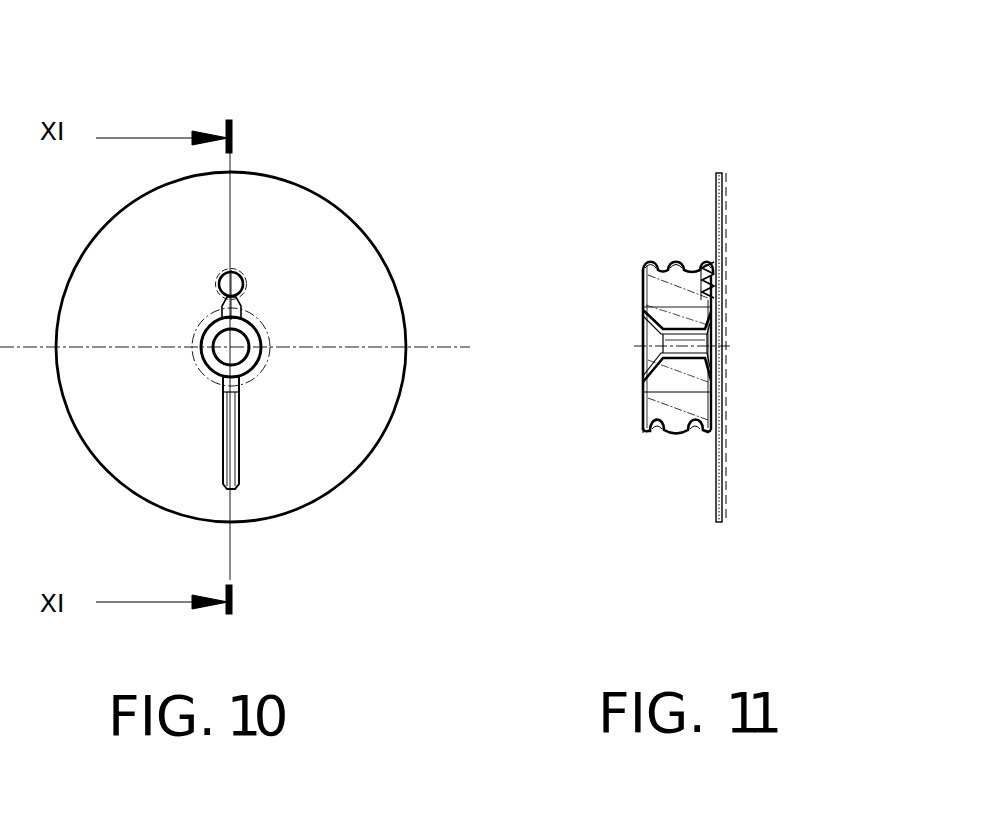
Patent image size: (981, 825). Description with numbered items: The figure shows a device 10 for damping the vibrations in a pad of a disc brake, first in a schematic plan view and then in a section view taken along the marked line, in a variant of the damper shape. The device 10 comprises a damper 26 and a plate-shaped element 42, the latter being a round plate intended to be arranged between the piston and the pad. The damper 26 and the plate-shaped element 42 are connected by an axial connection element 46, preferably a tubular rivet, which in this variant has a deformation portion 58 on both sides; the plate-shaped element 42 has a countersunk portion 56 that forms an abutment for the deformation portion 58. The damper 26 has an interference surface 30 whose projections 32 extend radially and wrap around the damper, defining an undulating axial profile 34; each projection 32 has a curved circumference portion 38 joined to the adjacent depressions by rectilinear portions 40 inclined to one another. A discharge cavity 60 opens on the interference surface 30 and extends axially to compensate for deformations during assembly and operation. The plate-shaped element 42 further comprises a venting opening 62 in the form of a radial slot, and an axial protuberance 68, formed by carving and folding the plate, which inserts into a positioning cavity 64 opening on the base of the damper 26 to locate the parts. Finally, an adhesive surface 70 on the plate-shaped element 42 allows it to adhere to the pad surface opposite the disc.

In FIG. 10, the device for damping the vibrations in a pad of a disc brake 10 is at (301, 158).
In FIG. 11, the device for damping the vibrations in a pad of a disc brake 10 is at (716, 150).
In FIG. 11, the damper 26 is at (652, 296).
In FIG. 11, the interference surface 30 is at (678, 449).
In FIG. 11, the projection 32 is at (706, 263).
In FIG. 11, the undulating axial profile 34 is at (648, 434).
In FIG. 11, the circumference portion 38 is at (703, 433).
In FIG. 11, the rectilinear portion 40 is at (673, 433).
In FIG. 10, the plate-shaped element 42 is at (322, 222).
In FIG. 10, the axial connection element 46 is at (248, 334).
In FIG. 11, the axial connection element 46 is at (723, 340).
In FIG. 11, the countersunk portion 56 is at (723, 378).
In FIG. 11, the deformation portion 58 is at (645, 358).
In FIG. 11, the discharge cavity 60 is at (641, 416).
In FIG. 10, the venting opening 62 is at (239, 463).
In FIG. 11, the positioning cavity 64 is at (722, 267).
In FIG. 11, the axial protuberance 68 is at (722, 288).
In FIG. 11, the adhesive surface 70 is at (728, 188).